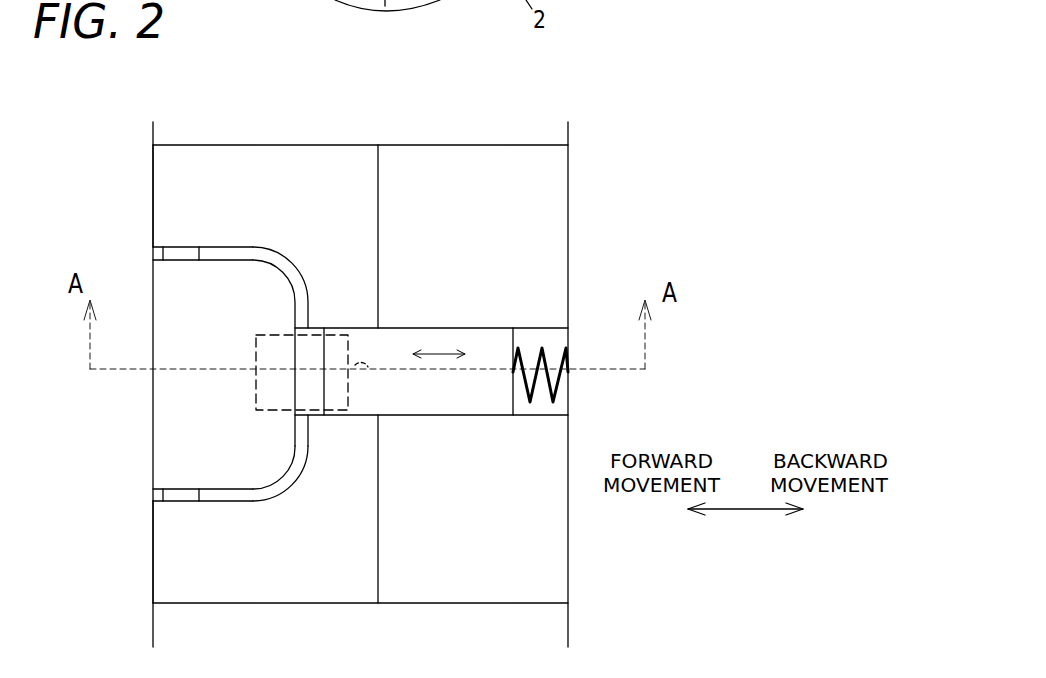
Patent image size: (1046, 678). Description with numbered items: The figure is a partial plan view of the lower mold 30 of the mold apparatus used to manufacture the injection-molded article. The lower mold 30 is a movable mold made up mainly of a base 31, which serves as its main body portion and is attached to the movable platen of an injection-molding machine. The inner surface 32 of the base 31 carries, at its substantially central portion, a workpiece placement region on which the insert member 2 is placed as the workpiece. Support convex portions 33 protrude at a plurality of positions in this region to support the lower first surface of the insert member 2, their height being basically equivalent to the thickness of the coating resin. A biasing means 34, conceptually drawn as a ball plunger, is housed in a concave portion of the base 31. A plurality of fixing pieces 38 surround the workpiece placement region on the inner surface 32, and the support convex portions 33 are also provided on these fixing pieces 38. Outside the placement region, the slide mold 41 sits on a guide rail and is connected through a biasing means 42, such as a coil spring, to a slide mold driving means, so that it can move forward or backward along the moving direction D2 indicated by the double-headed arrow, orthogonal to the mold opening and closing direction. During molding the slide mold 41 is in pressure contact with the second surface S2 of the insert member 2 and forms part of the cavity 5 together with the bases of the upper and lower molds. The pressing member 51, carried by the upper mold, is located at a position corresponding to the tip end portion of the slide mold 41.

The insert member 2 is at (177, 432).
The cavity 5 is at (265, 253).
The lower mold 30 is at (568, 220).
The base 31 is at (517, 553).
The inner surface 32 is at (487, 260).
The support convex portion 33 is at (178, 253).
The biasing means 34 is at (362, 362).
The fixing piece 38 is at (173, 172).
The slide mold 41 is at (455, 392).
The biasing means 42 is at (557, 388).
The pressing member 51 is at (320, 330).
The second surface S2 is at (297, 436).
The moving direction D2 is at (743, 510).